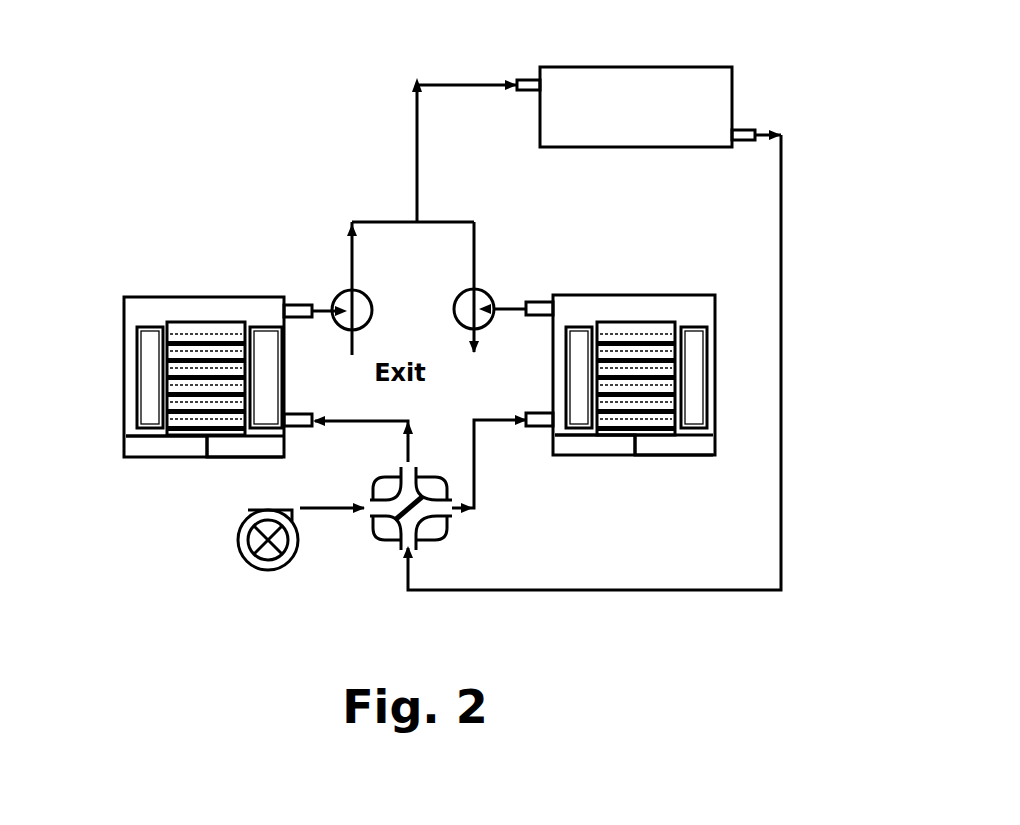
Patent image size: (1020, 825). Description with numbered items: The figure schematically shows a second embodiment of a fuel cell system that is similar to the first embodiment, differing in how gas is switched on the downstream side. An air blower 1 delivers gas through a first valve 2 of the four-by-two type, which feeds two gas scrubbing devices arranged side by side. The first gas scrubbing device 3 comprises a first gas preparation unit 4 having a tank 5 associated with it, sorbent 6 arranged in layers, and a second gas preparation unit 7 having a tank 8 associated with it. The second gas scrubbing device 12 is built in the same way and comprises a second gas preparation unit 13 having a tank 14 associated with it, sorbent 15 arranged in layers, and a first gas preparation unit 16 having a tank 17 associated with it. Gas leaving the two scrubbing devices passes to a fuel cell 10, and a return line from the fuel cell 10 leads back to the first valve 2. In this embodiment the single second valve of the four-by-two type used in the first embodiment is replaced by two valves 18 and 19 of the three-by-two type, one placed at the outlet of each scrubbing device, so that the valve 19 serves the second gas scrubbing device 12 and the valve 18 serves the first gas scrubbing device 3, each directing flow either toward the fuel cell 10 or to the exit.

The air blower 1 is at (250, 530).
The first valve 2 is at (380, 535).
The first gas scrubbing device 3 is at (717, 312).
The first gas preparation unit 4 is at (582, 370).
The tank 5 is at (605, 440).
The sorbent 6 is at (650, 395).
The second gas preparation unit 7 is at (716, 395).
The tank 8 is at (697, 445).
The fuel cell 10 is at (713, 80).
The second gas scrubbing device 12 is at (145, 297).
The second gas preparation unit 13 is at (148, 362).
The tank 14 is at (185, 447).
The sorbent 15 is at (200, 378).
The first gas preparation unit 16 is at (265, 375).
The tank 17 is at (233, 442).
The valve 18 is at (488, 298).
The valve 19 is at (338, 300).